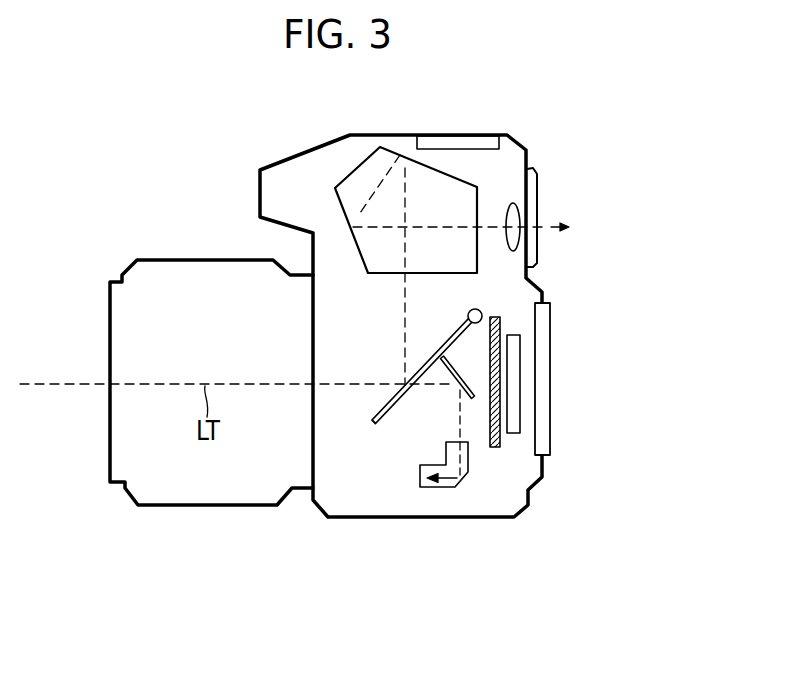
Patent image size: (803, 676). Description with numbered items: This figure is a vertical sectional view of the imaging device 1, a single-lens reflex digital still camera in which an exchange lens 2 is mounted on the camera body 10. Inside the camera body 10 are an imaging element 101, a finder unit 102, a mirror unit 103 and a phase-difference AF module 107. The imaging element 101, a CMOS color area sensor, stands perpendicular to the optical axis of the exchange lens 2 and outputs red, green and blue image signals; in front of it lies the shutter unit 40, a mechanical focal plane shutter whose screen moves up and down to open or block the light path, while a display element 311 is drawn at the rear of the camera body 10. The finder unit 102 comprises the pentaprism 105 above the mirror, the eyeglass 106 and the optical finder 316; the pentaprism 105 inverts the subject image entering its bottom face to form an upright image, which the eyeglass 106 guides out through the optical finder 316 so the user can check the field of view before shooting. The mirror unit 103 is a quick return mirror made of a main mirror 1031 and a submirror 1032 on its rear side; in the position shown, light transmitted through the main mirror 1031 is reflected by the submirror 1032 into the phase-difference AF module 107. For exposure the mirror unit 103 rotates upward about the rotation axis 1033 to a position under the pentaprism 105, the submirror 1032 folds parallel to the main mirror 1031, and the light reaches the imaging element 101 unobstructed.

The imaging device 1 is at (118, 148).
The exchange lens 2 is at (200, 254).
The camera body 10 is at (415, 128).
The imaging element 101 is at (513, 434).
The finder unit 102 is at (342, 172).
The mirror unit 103 is at (430, 433).
The main mirror 1031 is at (384, 413).
The submirror 1032 is at (474, 399).
The rotation axis 1033 is at (468, 311).
The pentaprism 105 is at (388, 160).
The eyeglass 106 is at (511, 202).
The phase-difference AF module 107 is at (432, 488).
The display monitor 311 is at (543, 388).
The optical finder 316 is at (540, 214).
The shutter unit 40 is at (494, 448).